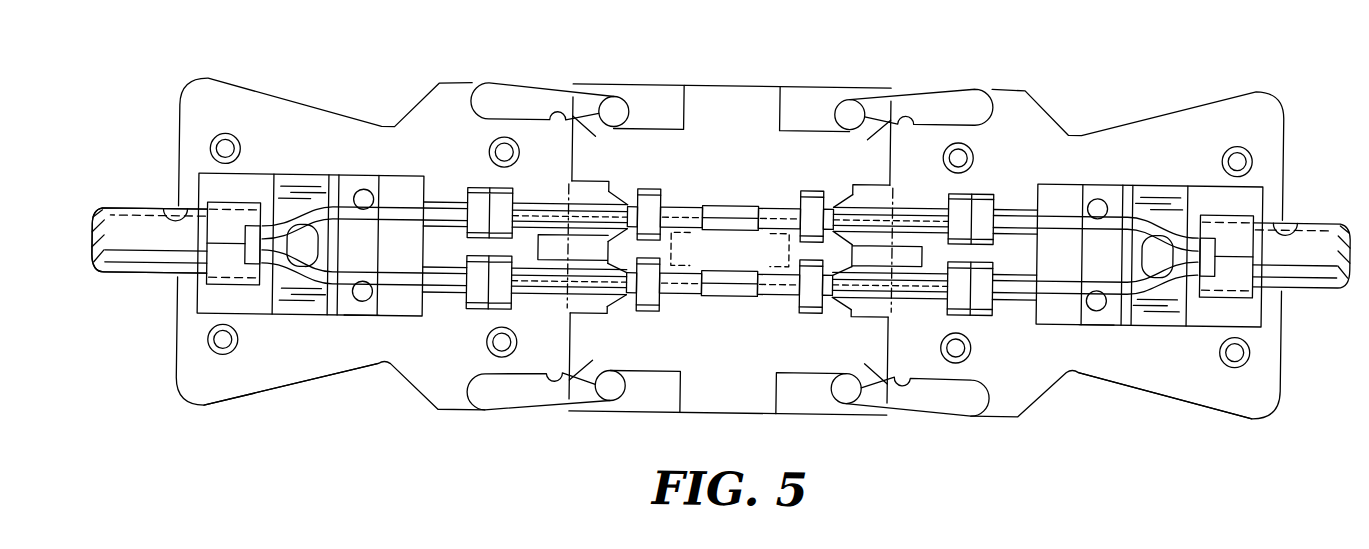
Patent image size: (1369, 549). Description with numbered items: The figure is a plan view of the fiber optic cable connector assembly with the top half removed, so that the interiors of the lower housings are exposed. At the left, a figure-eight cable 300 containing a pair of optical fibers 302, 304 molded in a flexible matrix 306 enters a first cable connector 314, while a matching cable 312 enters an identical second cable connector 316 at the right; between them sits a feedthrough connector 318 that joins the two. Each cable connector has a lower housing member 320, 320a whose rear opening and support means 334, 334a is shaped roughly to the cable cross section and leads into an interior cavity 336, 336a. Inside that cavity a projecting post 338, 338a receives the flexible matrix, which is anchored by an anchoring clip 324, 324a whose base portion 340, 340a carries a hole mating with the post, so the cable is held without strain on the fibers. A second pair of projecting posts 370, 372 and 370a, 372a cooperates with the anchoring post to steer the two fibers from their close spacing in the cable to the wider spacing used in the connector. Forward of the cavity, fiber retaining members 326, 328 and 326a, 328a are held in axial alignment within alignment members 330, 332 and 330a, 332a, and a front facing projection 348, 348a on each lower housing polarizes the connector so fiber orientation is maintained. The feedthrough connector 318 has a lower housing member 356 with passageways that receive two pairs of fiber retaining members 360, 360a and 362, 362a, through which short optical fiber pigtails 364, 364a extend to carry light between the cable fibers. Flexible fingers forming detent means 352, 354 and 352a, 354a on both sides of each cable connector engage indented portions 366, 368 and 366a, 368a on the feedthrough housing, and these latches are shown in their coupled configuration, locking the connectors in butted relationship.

The cable 300 is at (120, 215).
The optical fiber 302 is at (340, 202).
The optical fiber 304 is at (340, 290).
The flexible matrix 306 is at (130, 281).
The matching cable 312 is at (1334, 216).
The first cable connector 314 is at (292, 84).
The second cable connector 316 is at (1172, 89).
The feedthrough connector 318 is at (724, 70).
The lower housing member 320 is at (247, 396).
The lower housing member 320a is at (1195, 389).
The anchoring clip 324 is at (208, 292).
The anchoring clip 324a is at (1252, 293).
The fiber retaining member 326 is at (470, 192).
The fiber retaining member 326a is at (994, 190).
The fiber retaining member 328 is at (468, 312).
The fiber retaining member 328a is at (987, 312).
The alignment member 330 is at (511, 194).
The alignment member 330a is at (952, 193).
The alignment member 332 is at (508, 315).
The alignment member 332a is at (948, 302).
The rear opening and support means 334 is at (172, 215).
The rear opening and support means 334a is at (1290, 219).
The interior cavity 336 is at (360, 323).
The interior cavity 336a is at (1100, 323).
The projecting post 338 is at (297, 238).
The projecting post 338a is at (1157, 237).
The base portion 340 is at (290, 307).
The second housing portion 340a is at (1160, 312).
The front facing projection 348 is at (687, 215).
The front facing projection 348a is at (772, 216).
The detent means 352 is at (612, 98).
The detent means 352a is at (860, 101).
The detent means 354 is at (607, 395).
The detent means 354a is at (857, 396).
The lower housing member 356 is at (705, 404).
The fiber retaining member 360 is at (650, 189).
The fiber retaining member 360a is at (812, 190).
The fiber retaining member 362 is at (648, 313).
The fiber retaining member 362a is at (812, 313).
The optical fiber pigtail 364 is at (728, 216).
The optical fiber pigtail 364a is at (735, 297).
The indented portion 366 is at (614, 110).
The indented portion 366a is at (852, 111).
The indented portion 368 is at (612, 405).
The indented portion 368a is at (843, 391).
The projecting post 370 is at (365, 194).
The projecting post 370a is at (1100, 194).
The projecting post 372 is at (366, 306).
The projecting post 372a is at (1092, 305).